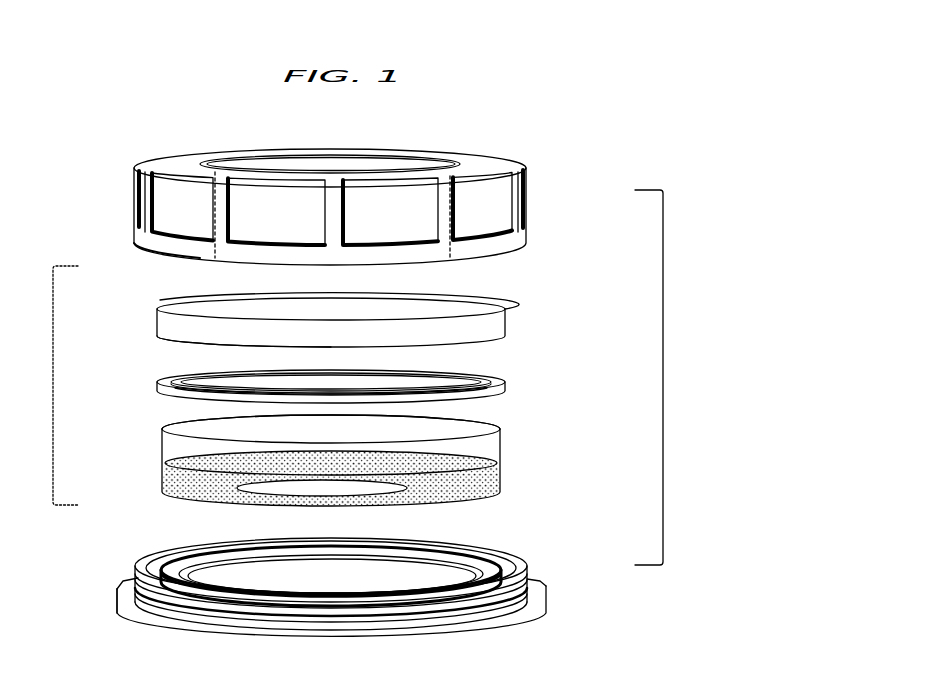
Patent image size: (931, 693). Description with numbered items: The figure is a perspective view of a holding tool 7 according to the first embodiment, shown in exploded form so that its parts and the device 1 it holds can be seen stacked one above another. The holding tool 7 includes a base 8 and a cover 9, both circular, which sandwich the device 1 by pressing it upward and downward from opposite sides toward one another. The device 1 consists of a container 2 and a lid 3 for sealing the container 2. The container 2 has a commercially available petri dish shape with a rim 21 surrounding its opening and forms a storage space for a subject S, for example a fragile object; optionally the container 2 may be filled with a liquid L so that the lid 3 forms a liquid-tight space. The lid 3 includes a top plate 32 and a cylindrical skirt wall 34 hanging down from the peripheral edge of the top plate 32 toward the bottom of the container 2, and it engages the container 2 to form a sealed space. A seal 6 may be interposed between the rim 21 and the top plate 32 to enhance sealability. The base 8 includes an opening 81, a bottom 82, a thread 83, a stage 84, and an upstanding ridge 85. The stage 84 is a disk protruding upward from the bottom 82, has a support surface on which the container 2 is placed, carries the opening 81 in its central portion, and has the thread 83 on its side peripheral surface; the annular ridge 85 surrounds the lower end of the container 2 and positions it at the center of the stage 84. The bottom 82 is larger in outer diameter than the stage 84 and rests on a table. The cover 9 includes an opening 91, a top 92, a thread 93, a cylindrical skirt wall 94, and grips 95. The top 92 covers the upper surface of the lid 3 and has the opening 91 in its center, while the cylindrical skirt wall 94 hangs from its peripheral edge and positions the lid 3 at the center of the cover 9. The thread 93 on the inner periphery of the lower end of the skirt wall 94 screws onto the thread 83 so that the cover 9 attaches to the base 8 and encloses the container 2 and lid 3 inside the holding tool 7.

The device 1 is at (53, 387).
The container 2 is at (544, 460).
The rim 21 is at (162, 433).
The lid 3 is at (538, 323).
The top plate 32 is at (157, 302).
The cylindrical skirt wall 34 is at (156, 324).
The seal 6 is at (541, 378).
The holding tool 7 is at (663, 377).
The base 8 is at (568, 570).
The opening 81 is at (390, 583).
The bottom 82 is at (538, 612).
The thread 83 is at (117, 589).
The stage 84 is at (172, 563).
The ridge 85 is at (517, 558).
The cover 9 is at (564, 191).
The opening 91 is at (367, 167).
The top 92 is at (167, 162).
The thread 93 is at (172, 242).
The cylindrical skirt wall 94 is at (142, 204).
The grips 95 is at (527, 168).
The subject S is at (237, 488).
The liquid L is at (337, 487).